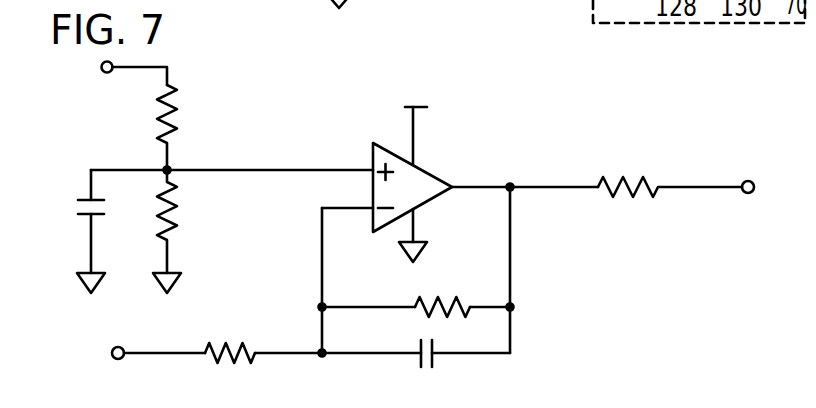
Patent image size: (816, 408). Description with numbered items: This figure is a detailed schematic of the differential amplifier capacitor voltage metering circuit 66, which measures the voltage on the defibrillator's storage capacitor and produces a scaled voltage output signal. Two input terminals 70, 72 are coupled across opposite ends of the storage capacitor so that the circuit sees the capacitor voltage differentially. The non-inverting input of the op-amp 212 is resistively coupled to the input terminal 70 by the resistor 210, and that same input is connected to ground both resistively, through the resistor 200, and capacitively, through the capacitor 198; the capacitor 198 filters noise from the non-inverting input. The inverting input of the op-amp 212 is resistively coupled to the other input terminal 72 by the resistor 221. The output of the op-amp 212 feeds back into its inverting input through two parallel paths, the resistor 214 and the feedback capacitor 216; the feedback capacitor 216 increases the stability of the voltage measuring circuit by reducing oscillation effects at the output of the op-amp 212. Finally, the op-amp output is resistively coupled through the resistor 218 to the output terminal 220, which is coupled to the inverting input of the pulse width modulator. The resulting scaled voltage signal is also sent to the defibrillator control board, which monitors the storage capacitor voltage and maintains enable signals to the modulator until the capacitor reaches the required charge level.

The input terminal 70 is at (105, 73).
The resistor 210 is at (177, 104).
The resistor 200 is at (177, 201).
The capacitor 198 is at (78, 208).
The op-amp 212 is at (388, 143).
The differential amplifier capacitor voltage metering circuit 66 is at (474, 118).
The resistor 218 is at (612, 176).
The output terminal 220 is at (746, 180).
The resistor 214 is at (428, 300).
The feedback capacitor 216 is at (425, 368).
The resistor 221 is at (223, 343).
The input terminal 72 is at (121, 346).